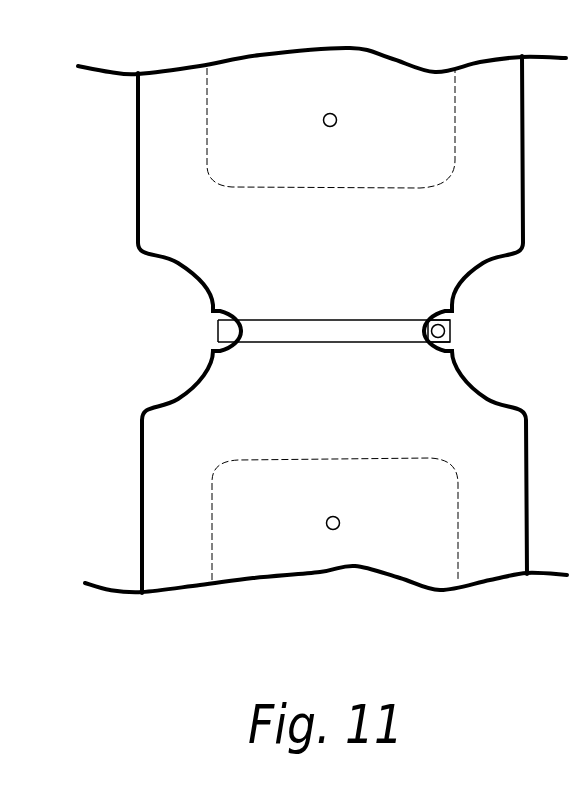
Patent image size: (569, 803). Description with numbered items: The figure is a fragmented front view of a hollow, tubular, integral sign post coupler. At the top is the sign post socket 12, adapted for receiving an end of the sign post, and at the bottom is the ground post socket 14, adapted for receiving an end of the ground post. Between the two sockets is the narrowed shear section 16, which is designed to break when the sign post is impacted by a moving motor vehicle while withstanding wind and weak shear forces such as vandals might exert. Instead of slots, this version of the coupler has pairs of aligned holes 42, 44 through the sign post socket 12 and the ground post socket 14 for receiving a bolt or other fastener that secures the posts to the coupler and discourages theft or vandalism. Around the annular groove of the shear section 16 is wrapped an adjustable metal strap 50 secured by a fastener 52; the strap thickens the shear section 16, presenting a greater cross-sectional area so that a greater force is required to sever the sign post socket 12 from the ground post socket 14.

The sign post socket 12 is at (138, 129).
The ground post socket 14 is at (142, 470).
The shear section 16 is at (181, 313).
The aligned holes 42 is at (337, 120).
The aligned holes 44 is at (340, 522).
The adjustable metal strap 50 is at (450, 320).
The fastener 52 is at (450, 336).